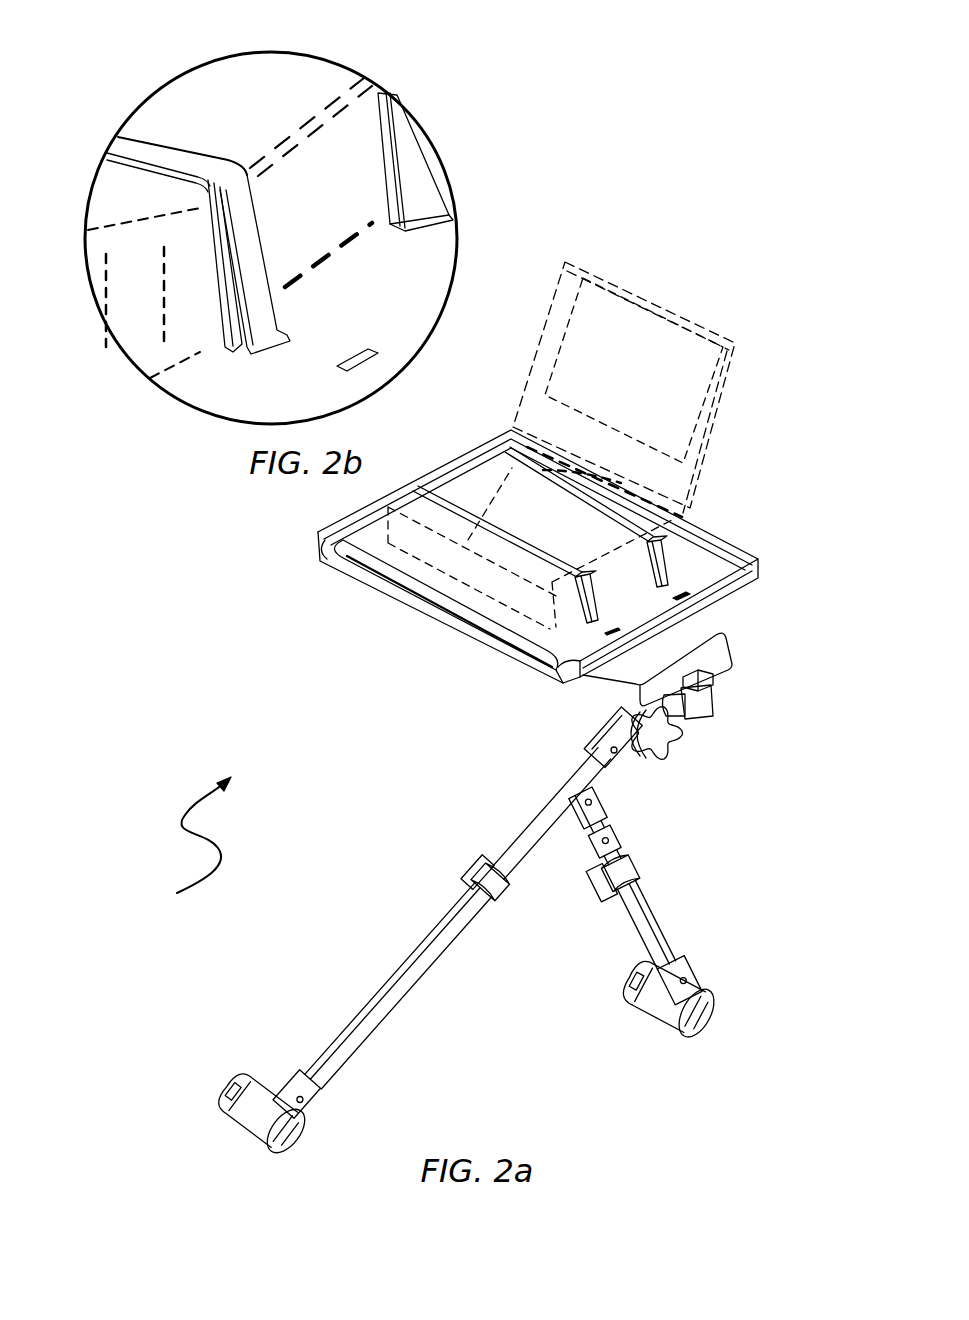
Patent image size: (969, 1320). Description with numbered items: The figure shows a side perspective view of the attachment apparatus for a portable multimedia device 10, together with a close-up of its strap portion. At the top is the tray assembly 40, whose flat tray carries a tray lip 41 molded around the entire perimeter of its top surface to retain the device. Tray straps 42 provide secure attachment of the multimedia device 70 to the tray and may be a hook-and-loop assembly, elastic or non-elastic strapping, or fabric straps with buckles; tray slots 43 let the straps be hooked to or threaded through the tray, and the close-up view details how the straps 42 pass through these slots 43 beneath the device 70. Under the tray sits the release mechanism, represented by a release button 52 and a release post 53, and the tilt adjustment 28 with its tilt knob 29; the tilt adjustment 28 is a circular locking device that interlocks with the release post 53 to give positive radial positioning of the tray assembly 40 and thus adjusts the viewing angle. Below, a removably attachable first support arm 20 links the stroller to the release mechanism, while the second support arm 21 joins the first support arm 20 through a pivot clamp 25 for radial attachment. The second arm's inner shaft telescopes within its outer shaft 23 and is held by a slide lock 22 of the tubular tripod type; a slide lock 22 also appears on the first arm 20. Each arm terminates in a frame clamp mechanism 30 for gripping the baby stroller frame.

In FIG. 2A, the portable multimedia device attachment apparatus 10 is at (187, 851).
In FIG. 2A, the first support arm 20 is at (403, 963).
In FIG. 2A, the second support arm 21 is at (655, 928).
In FIG. 2A, the slide lock 22 is at (470, 862).
In FIG. 2A, the outer shaft 23 is at (622, 848).
In FIG. 2A, the pivot clamp 25 is at (610, 826).
In FIG. 2A, the tilt adjustment 28 is at (603, 727).
In FIG. 2A, the tilt knob 29 is at (672, 745).
In FIG. 2A, the frame clamp mechanism 30 is at (222, 1083).
In FIG. 2A, the tray assembly 40 is at (766, 574).
In FIG. 2B, the tray assembly 40 is at (405, 298).
In FIG. 2A, the tray lip 41 is at (375, 574).
In FIG. 2A, the tray strap 42 is at (665, 553).
In FIG. 2B, the tray strap 42 is at (147, 149).
In FIG. 2A, the tray slot 43 is at (620, 632).
In FIG. 2B, the tray slot 43 is at (453, 216).
In FIG. 2A, the release button 52 is at (716, 682).
In FIG. 2A, the release post 53 is at (700, 705).
In FIG. 2A, the multimedia device 70 is at (712, 440).
In FIG. 2B, the multimedia device 70 is at (229, 112).